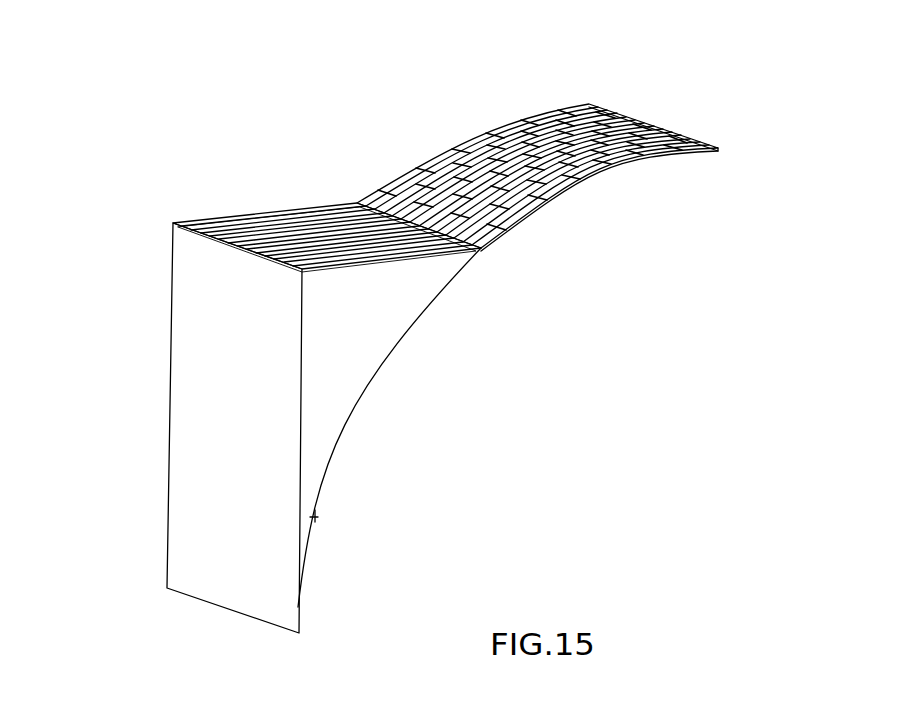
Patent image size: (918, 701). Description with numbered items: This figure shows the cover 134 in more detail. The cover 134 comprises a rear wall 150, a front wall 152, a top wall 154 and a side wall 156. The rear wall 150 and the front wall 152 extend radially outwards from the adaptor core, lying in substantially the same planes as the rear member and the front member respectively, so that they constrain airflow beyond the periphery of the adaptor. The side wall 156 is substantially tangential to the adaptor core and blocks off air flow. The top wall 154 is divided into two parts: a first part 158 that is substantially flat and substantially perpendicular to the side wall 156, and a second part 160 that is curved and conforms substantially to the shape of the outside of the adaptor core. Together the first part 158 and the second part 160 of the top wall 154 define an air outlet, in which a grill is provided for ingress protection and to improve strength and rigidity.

The cover 134 is at (727, 112).
The rear wall 150 is at (372, 327).
The front wall 152 is at (313, 518).
The top wall 154 is at (403, 173).
The side wall 156 is at (200, 405).
The first part 158 is at (278, 215).
The second part 160 is at (492, 145).